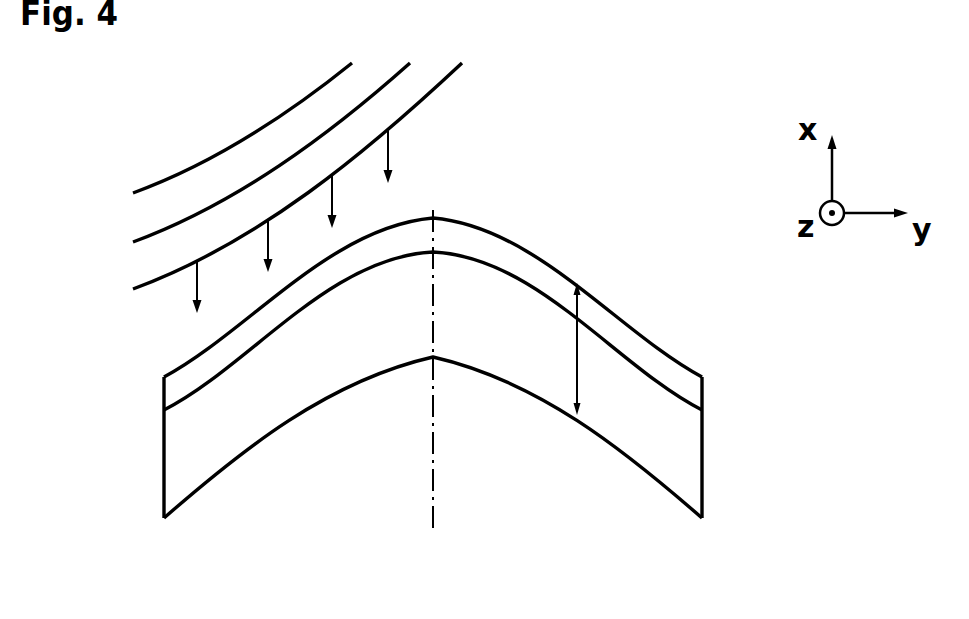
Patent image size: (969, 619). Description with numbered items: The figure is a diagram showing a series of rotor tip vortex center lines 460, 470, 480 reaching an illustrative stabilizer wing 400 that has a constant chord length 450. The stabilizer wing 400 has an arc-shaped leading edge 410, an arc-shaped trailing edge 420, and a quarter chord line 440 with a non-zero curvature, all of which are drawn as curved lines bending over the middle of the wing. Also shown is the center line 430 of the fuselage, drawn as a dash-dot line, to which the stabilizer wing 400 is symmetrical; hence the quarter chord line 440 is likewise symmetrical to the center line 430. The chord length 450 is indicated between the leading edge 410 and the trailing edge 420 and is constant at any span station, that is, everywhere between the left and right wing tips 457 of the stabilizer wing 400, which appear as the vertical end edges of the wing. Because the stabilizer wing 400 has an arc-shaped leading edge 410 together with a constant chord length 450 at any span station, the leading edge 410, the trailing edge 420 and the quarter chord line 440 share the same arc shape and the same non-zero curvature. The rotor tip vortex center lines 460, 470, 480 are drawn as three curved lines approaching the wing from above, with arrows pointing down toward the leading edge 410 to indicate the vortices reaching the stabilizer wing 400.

The stabilizer wing 400 is at (640, 150).
The leading edge 410 is at (522, 242).
The trailing edge 420 is at (340, 393).
The center line 430 is at (436, 453).
The quarter chord line 440 is at (647, 360).
The chord length 450 is at (577, 360).
The wing tips 457 is at (164, 454).
The rotor tip vortex center line 460 is at (182, 264).
The rotor tip vortex center line 470 is at (187, 210).
The rotor tip vortex center line 480 is at (193, 159).